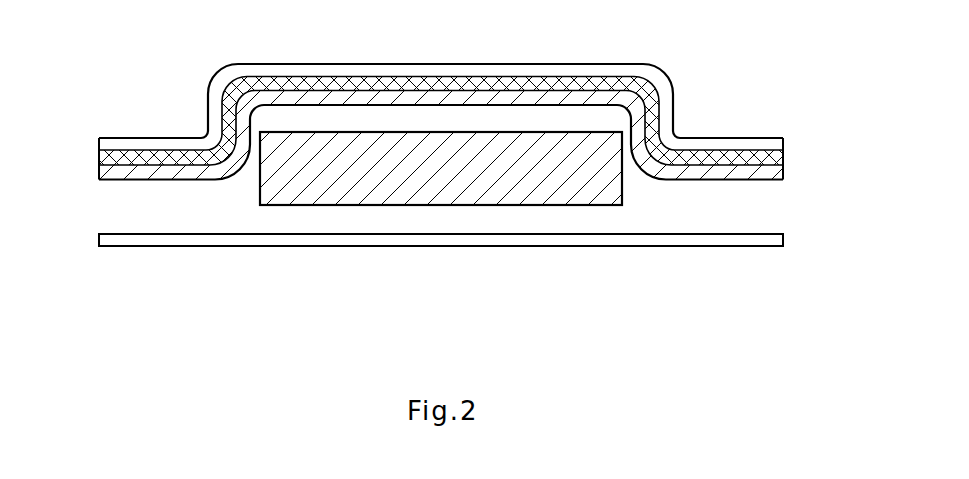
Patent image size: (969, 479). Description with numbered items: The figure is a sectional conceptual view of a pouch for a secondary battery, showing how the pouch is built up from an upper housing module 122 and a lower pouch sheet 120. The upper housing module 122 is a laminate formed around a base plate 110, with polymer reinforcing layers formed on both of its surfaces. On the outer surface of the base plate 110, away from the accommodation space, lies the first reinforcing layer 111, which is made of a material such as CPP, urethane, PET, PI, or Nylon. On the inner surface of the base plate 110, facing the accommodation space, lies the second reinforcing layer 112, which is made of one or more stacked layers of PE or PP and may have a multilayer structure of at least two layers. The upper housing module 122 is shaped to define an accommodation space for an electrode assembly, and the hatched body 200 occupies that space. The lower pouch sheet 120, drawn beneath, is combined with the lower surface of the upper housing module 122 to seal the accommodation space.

The upper housing module 122 is at (92, 140).
The first reinforcing layer 111 is at (747, 145).
The base plate 110 is at (783, 157).
The second reinforcing layer 112 is at (783, 173).
The electronic component 200 is at (440, 142).
The lower pouch sheet 120 is at (783, 240).